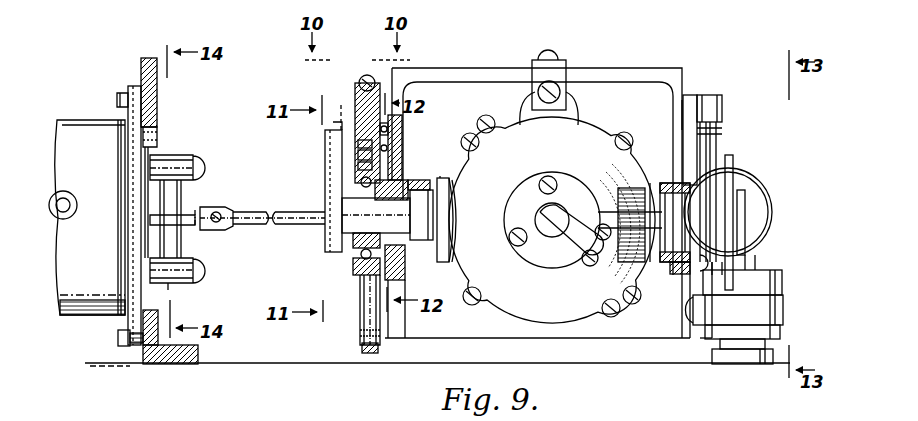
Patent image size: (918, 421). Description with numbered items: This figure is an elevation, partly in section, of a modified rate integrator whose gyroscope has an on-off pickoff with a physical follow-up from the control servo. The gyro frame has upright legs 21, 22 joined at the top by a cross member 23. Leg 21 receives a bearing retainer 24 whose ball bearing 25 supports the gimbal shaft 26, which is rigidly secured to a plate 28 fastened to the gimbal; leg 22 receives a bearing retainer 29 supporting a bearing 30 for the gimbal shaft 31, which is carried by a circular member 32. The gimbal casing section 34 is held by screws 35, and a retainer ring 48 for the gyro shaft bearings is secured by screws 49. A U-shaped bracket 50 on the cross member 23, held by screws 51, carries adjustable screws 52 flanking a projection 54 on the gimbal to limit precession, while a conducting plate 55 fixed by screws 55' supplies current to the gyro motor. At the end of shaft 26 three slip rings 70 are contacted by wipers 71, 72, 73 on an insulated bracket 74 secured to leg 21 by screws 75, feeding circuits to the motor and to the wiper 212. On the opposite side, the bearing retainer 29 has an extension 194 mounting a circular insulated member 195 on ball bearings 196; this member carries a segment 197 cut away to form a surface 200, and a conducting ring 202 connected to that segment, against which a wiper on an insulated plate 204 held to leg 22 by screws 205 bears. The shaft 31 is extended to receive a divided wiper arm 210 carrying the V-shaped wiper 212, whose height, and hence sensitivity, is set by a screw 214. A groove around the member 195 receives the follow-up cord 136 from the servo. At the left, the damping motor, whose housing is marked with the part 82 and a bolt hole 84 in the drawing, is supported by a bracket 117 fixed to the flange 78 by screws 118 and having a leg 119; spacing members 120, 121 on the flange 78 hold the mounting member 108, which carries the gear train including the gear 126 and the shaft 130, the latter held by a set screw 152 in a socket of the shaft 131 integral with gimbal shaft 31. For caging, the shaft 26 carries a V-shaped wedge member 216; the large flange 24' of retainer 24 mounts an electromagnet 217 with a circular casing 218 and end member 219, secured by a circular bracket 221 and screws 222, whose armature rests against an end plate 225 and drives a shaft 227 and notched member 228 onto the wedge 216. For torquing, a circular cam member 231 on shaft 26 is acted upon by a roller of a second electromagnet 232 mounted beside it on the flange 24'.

The leg 21 is at (682, 118).
The leg 22 is at (400, 290).
The cross member 23 is at (608, 80).
The bearing retainer 24 is at (680, 300).
The flange 24' is at (673, 322).
The ball bearing 25 is at (622, 195).
The shaft 26 is at (675, 222).
The plate 28 is at (650, 183).
The bearing retainer 29 is at (400, 184).
The bearing 30 is at (429, 217).
The gimbal shaft 31 is at (376, 215).
The circular member 32 is at (440, 180).
The casing section 34 is at (460, 220).
The screws 35 is at (472, 306).
The retainer ring 48 is at (575, 200).
The screws 49 is at (552, 178).
The U-shaped bracket 50 is at (532, 66).
The screws 51 is at (551, 52).
The adjustable screw 52 is at (553, 90).
The projection 54 is at (575, 110).
The conducting plate 55 is at (569, 248).
The screws 55' is at (593, 259).
The slip rings 70 is at (713, 265).
The wiper 71 is at (697, 133).
The wiper 72 is at (712, 126).
The wiper 73 is at (705, 133).
The insulated bracket 74 is at (690, 95).
The screws 75 is at (722, 106).
The flange 78 is at (128, 326).
The bracket 82 is at (90, 217).
The bolt hole 84 is at (66, 205).
The mounting member 108 is at (190, 258).
The bracket 117 is at (157, 95).
The screws 118 is at (117, 99).
The leg 119 is at (192, 359).
The spacing member 120 is at (176, 160).
The spacing member 121 is at (170, 282).
The gear 126 is at (178, 192).
The shaft 130 is at (198, 211).
The shaft 131 is at (246, 210).
The follow-up cord 136 is at (372, 353).
The set screw 152 is at (217, 224).
The extension 194 is at (356, 250).
The insulated member 195 is at (355, 92).
The ball bearings 196 is at (356, 270).
The segment 197 is at (360, 155).
The surface 200 is at (358, 143).
The conducting ring 202 is at (356, 165).
The insulated plate 204 is at (393, 140).
The screws 205 is at (388, 127).
The divided wiper arm 210 is at (333, 190).
The wiper 212 is at (340, 125).
The screw 214 is at (333, 128).
The wedge member 216 is at (744, 195).
The electromagnet 217 is at (784, 285).
The circular casing 218 is at (733, 282).
The end member 219 is at (782, 333).
The circular bracket 221 is at (776, 311).
The screws 222 is at (705, 310).
The end plate 225 is at (746, 365).
The shaft 227 is at (752, 262).
The member 228 is at (746, 232).
The cam member 231 is at (732, 160).
The electromagnet 232 is at (773, 206).